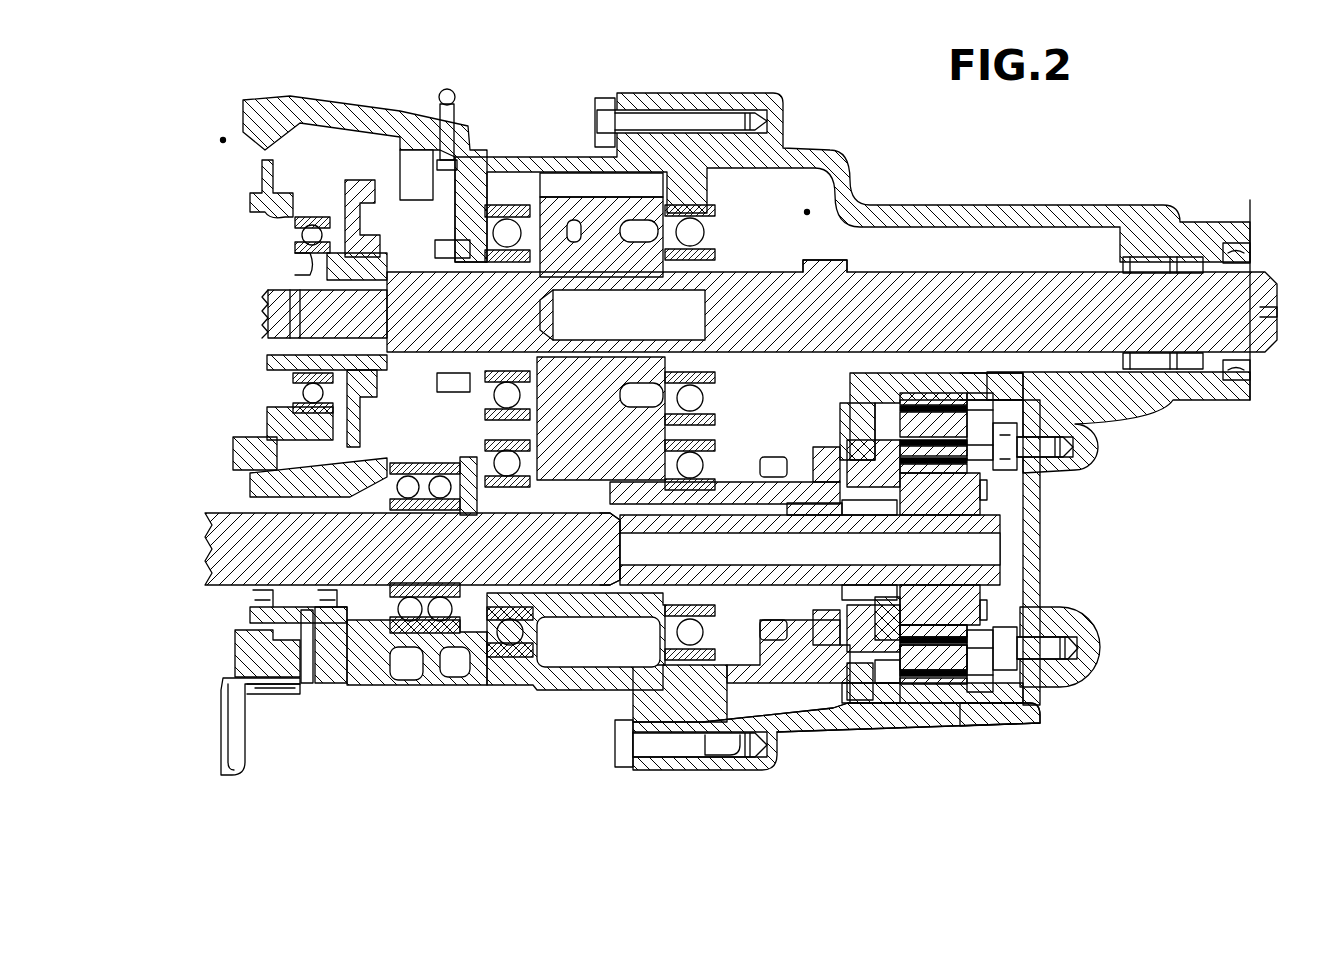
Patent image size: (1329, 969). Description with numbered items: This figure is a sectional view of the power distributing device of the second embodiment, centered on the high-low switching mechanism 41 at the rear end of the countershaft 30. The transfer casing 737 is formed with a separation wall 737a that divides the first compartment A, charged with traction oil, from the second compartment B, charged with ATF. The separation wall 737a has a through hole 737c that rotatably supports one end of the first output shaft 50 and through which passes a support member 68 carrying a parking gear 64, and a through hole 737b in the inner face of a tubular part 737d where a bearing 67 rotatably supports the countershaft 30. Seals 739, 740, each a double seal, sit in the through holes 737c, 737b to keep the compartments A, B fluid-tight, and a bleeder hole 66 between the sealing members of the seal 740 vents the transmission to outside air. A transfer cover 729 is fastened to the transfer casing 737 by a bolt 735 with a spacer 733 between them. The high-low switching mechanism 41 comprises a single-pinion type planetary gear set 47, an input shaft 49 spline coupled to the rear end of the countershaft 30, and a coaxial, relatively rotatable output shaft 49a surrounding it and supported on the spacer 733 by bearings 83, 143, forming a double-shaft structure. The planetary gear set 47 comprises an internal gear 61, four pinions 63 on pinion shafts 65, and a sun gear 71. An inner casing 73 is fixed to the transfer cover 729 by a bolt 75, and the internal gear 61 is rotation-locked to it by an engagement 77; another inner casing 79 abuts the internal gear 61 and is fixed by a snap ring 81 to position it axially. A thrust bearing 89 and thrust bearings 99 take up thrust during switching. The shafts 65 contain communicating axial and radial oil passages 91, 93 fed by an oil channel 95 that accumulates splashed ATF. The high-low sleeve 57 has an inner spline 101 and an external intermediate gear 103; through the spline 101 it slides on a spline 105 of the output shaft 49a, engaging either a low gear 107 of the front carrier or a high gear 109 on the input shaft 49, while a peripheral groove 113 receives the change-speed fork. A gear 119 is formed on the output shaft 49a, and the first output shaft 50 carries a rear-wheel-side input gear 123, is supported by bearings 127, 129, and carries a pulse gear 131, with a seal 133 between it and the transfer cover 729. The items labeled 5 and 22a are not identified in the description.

The transmission case 5 is at (1085, 718).
The bracket 22a is at (242, 750).
The countershaft 30 is at (240, 525).
The high-low switching mechanism 41 is at (1045, 558).
The single-pinion type planetary gear set 47 is at (1012, 735).
The input shaft 49 is at (945, 520).
The output shaft 49a is at (740, 518).
The first output shaft 50 is at (918, 295).
The high-low sleeve 57 is at (808, 625).
The internal gear 61 is at (930, 405).
The pinions 63 is at (930, 680).
The parking gear 64 is at (358, 185).
The pinion shafts 65 is at (955, 660).
The bleeder hole 66 is at (340, 655).
The bearing 67 is at (858, 420).
The support member 68 is at (430, 332).
The sun gear 71 is at (975, 620).
The inner casing 73 is at (1035, 475).
The bolt 75 is at (1045, 447).
The engagement 77 is at (975, 380).
The inner casing 79 is at (885, 695).
The snap ring 81 is at (850, 705).
The bearing 83 is at (690, 632).
The thrust bearing 89 is at (862, 425).
The axial oil passage 91 is at (987, 485).
The radial oil passage 93 is at (925, 515).
The oil channel 95 is at (990, 640).
The thrust bearings 99 is at (987, 495).
The spline 101 is at (805, 515).
The intermediate gear 103 is at (860, 515).
The spline 105 is at (745, 490).
The low gear 107 is at (818, 480).
The high gear 109 is at (875, 590).
The peripheral groove 113 is at (772, 640).
The gear 119 is at (587, 630).
The rear-wheel-side input gear 123 is at (553, 190).
The bearing 127 is at (507, 225).
The bearing 129 is at (1200, 262).
The pulse gear 131 is at (838, 260).
The seal 133 is at (1250, 253).
The bearing 143 is at (630, 545).
The transfer cover 729 is at (820, 735).
The spacer 733 is at (688, 115).
The bolt 735 is at (605, 100).
The transfer casing 737 is at (400, 111).
The separation wall 737a is at (470, 210).
The through hole 737b is at (380, 650).
The through hole 737c is at (295, 236).
The tubular part 737d is at (262, 440).
The seal 739 is at (447, 200).
The seal 740 is at (307, 650).
The first compartment A is at (223, 140).
The second compartment B is at (807, 212).